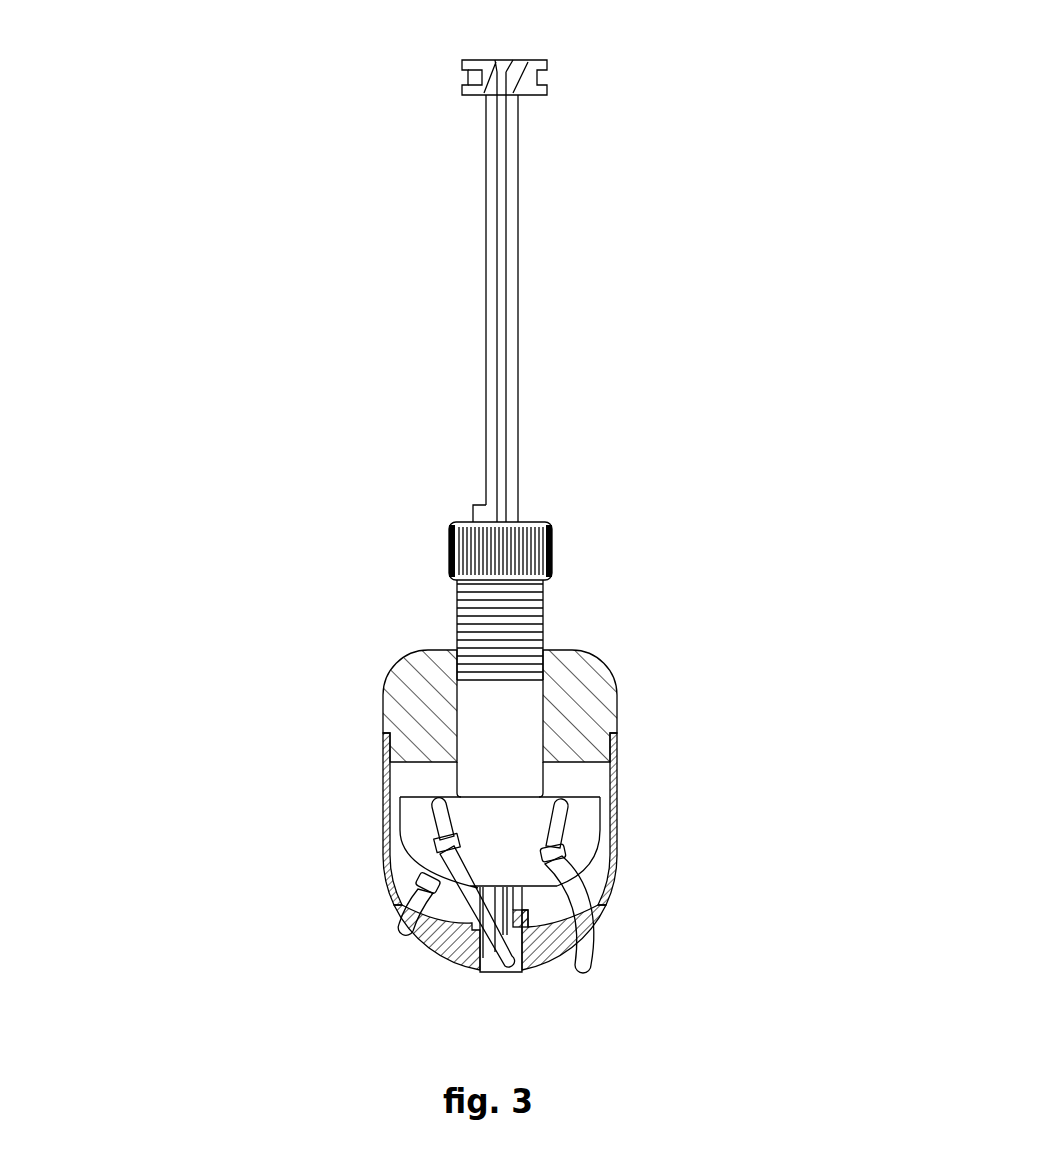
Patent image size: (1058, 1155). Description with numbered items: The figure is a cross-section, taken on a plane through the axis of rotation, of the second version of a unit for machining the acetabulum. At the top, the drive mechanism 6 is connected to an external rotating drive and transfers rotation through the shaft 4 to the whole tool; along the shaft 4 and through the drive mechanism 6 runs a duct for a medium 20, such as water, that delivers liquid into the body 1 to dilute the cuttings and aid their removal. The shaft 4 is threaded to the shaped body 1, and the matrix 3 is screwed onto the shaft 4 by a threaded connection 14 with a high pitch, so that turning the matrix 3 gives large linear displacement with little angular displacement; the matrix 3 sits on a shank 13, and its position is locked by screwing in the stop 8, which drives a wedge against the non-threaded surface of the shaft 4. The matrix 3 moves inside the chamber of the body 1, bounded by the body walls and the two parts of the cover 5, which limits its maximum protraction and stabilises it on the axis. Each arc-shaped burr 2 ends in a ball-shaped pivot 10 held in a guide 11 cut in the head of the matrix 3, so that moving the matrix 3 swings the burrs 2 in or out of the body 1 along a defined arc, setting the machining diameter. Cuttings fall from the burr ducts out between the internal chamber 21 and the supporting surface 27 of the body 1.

The body 1 is at (554, 973).
The burr 2 is at (483, 963).
The matrix 3 is at (594, 788).
The shaft 4 is at (535, 171).
The cover 5 is at (610, 651).
The drive mechanism 6 is at (560, 58).
The stop 8 is at (460, 506).
The ball-shaped pivot 10 is at (405, 883).
The guide 11 is at (417, 810).
The shank 13 is at (445, 763).
The threaded connection 14 is at (445, 594).
The duct for a medium 20 is at (520, 302).
The internal chamber 21 is at (703, 897).
The supporting surface 27 is at (513, 982).